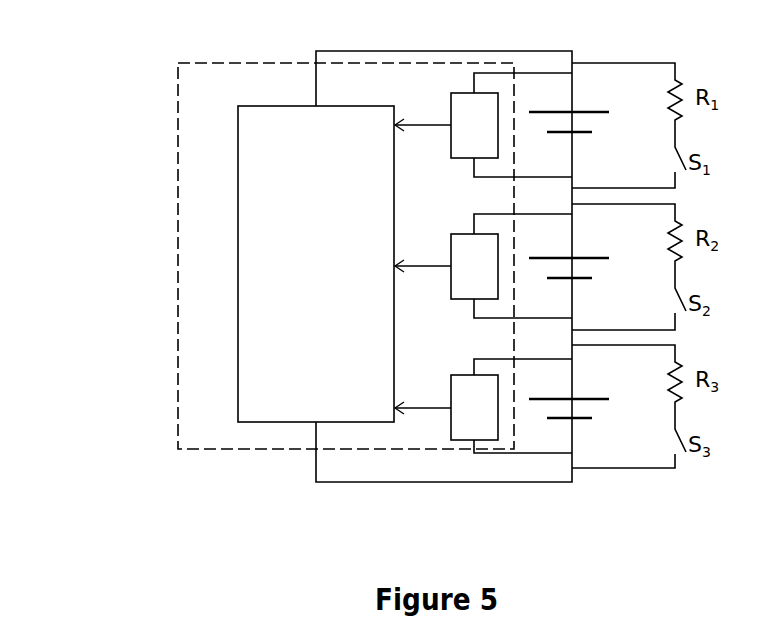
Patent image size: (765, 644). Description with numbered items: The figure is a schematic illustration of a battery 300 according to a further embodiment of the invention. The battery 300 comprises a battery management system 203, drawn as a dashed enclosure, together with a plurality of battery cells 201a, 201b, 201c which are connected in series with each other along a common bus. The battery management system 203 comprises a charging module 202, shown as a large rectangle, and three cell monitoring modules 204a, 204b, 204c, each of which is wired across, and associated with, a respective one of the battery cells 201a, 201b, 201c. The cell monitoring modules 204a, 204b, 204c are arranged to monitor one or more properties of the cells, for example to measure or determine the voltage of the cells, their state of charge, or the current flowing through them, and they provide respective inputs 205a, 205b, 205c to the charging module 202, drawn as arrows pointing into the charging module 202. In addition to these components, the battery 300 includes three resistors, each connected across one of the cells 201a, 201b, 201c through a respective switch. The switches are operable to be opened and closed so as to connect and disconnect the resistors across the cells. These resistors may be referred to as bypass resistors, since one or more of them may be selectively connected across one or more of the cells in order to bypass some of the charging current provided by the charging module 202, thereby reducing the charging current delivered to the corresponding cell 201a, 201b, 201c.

The battery 300 is at (121, 87).
The battery management system 203 is at (237, 62).
The charging module 202 is at (237, 140).
The cell monitoring module 204a is at (460, 160).
The cell monitoring module 204b is at (460, 301).
The cell monitoring module 204c is at (460, 442).
The input 205a is at (411, 122).
The input 205b is at (411, 263).
The input 205c is at (411, 405).
The battery cell 201a is at (588, 111).
The battery cell 201b is at (588, 257).
The battery cell 201c is at (588, 398).